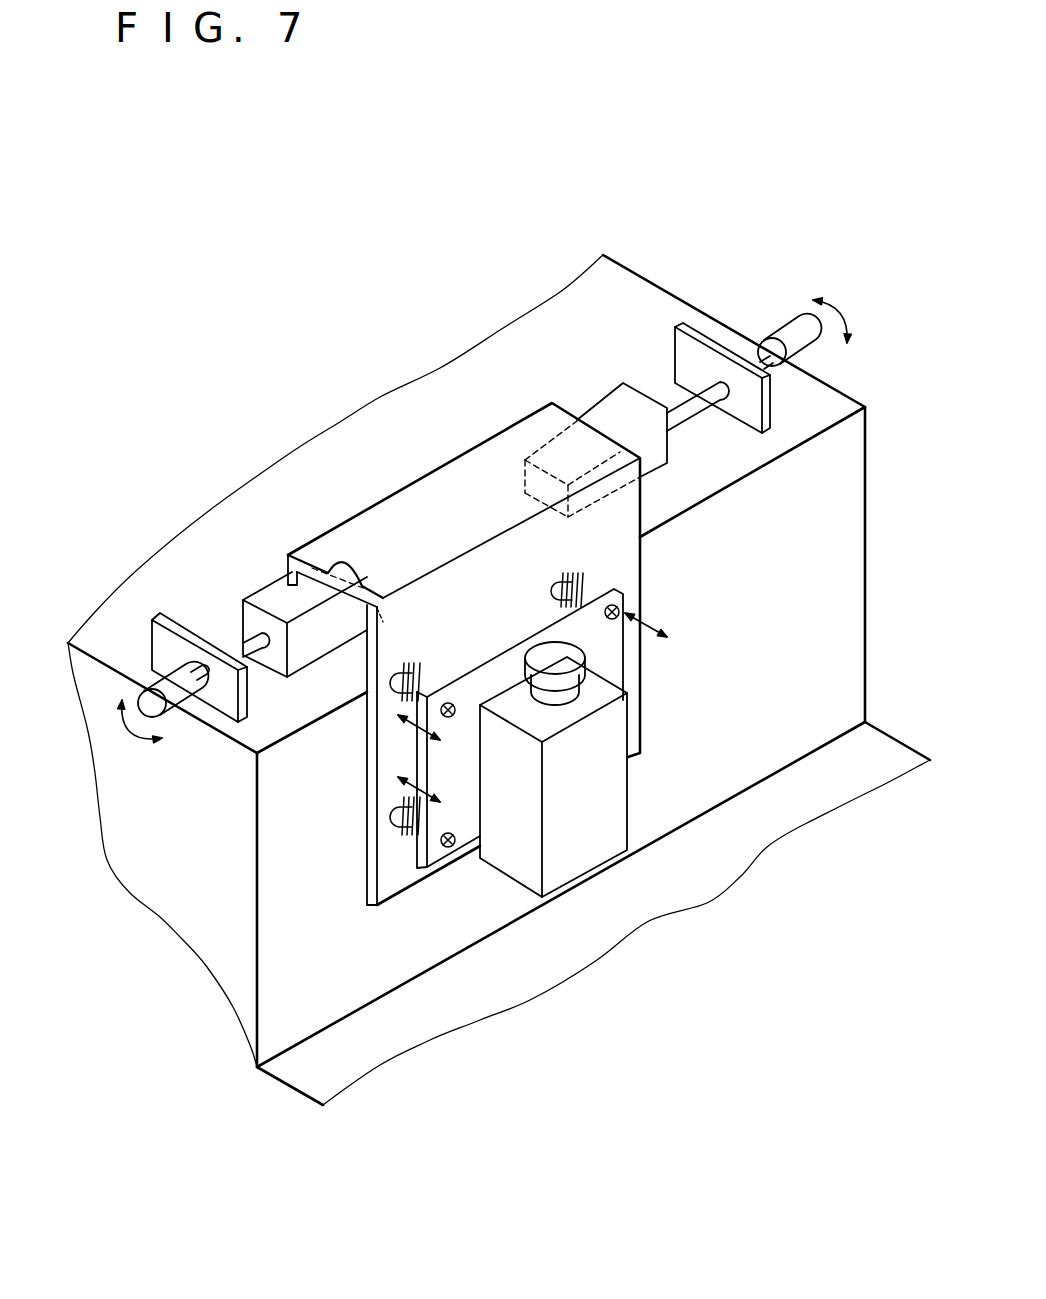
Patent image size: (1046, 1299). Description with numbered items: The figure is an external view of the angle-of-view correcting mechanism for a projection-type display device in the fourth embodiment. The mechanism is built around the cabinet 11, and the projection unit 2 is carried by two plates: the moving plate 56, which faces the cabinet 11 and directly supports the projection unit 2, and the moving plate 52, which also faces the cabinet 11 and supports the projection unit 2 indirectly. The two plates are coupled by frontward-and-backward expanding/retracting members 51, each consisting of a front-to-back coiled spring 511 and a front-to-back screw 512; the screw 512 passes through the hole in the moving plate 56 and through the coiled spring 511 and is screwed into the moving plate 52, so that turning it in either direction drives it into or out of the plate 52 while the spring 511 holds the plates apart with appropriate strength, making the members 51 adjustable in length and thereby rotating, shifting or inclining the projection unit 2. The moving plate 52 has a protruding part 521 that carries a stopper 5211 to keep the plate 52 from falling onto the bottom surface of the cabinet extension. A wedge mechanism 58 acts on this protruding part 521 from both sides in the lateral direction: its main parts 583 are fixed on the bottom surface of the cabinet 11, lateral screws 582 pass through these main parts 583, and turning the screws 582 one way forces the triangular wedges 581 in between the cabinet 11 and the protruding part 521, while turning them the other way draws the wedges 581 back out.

The projection unit 2 is at (620, 820).
The cabinet 11 is at (197, 900).
The frontward-and-backward expanding/retracting member 51 is at (587, 817).
The front-to-back coiled spring 511 is at (584, 590).
The front-to-back screw 512 is at (620, 603).
The moving plate 52 is at (472, 578).
The protruding part 521 is at (327, 562).
The stopper 5211 is at (280, 558).
The moving plate 56 is at (517, 642).
The wedge mechanism 58 is at (775, 172).
The wedge 581 is at (628, 398).
The lateral screw 582 is at (795, 328).
The main part of the wedge mechanism 583 is at (708, 345).